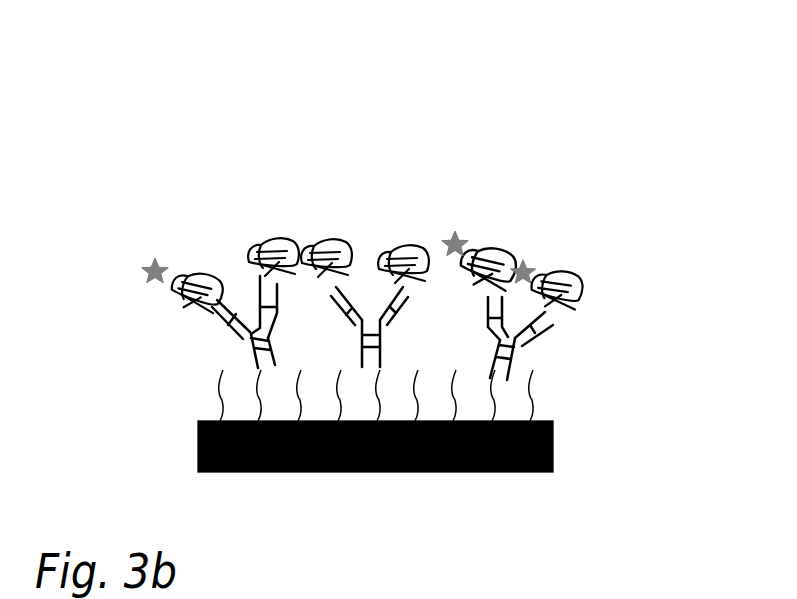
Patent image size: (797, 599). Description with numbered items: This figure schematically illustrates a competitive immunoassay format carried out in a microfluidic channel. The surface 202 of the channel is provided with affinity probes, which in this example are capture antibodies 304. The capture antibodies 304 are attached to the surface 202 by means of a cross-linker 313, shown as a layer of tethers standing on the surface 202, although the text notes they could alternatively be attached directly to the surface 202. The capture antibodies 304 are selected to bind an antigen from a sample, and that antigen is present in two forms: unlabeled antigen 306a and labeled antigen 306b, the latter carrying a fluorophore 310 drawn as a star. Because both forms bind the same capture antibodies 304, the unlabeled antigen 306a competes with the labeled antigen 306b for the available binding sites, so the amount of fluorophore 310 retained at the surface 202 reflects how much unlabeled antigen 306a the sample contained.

The surface 202 is at (210, 421).
The capture antibodies 304 is at (553, 326).
The unlabeled antigen 306a is at (323, 247).
The labeled antigen 306b is at (199, 272).
The fluorophore 310 is at (460, 245).
The cross-linker 313 is at (490, 392).